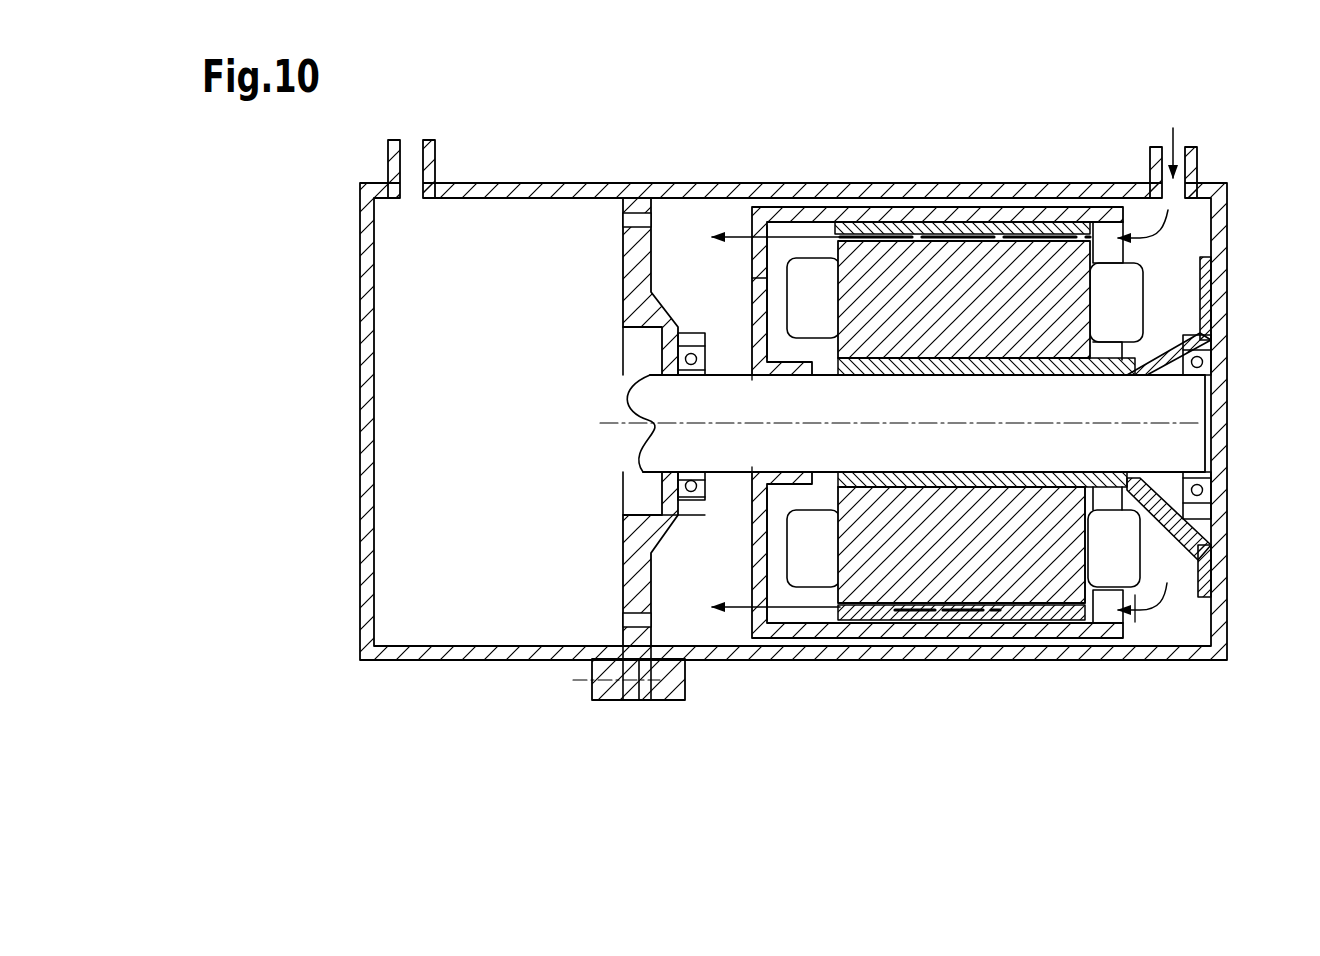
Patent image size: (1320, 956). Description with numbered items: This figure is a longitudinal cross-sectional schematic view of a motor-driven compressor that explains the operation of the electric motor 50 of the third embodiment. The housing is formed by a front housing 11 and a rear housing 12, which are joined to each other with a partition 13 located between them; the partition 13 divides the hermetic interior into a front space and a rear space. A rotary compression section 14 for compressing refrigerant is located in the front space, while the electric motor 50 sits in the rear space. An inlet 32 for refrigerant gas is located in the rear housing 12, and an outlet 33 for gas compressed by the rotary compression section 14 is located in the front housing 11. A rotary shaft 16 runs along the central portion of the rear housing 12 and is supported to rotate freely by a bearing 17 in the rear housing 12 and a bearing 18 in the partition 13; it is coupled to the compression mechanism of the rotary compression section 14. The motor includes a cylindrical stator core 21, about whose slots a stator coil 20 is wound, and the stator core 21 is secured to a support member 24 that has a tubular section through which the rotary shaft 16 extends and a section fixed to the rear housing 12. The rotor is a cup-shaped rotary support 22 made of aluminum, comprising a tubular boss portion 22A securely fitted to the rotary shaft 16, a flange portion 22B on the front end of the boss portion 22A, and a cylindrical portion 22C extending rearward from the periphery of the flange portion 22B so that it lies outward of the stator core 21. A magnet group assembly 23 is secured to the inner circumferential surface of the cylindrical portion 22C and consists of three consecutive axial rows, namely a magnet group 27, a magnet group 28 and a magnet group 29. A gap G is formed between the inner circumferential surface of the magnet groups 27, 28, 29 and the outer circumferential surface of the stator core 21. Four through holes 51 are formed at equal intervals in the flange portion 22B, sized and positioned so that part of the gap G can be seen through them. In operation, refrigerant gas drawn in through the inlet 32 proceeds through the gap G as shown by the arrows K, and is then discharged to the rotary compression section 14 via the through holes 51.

The front housing 11 is at (545, 186).
The rear housing 12 is at (939, 186).
The partition 13 is at (634, 246).
The rotary compression section 14 is at (496, 311).
The rotary shaft 16 is at (956, 413).
The bearing 17 is at (1207, 373).
The bearing 18 is at (668, 342).
The stator coil 20 is at (1206, 301).
The stator core 21 is at (1082, 541).
The rotary support 22 is at (823, 205).
The boss portion 22A is at (787, 483).
The flange portion 22B is at (757, 297).
The cylindrical portion 22C is at (873, 222).
The magnet group assembly 23 is at (986, 546).
The support member 24 is at (1193, 321).
The magnet group 27 is at (870, 633).
The magnet group 28 is at (947, 628).
The magnet group 29 is at (1057, 633).
The inlet 32 is at (1198, 159).
The outlet 33 is at (412, 145).
The electric motor 50 is at (1130, 627).
The through holes 51 is at (757, 265).
The arrows K is at (783, 237).
The gap G is at (1058, 232).